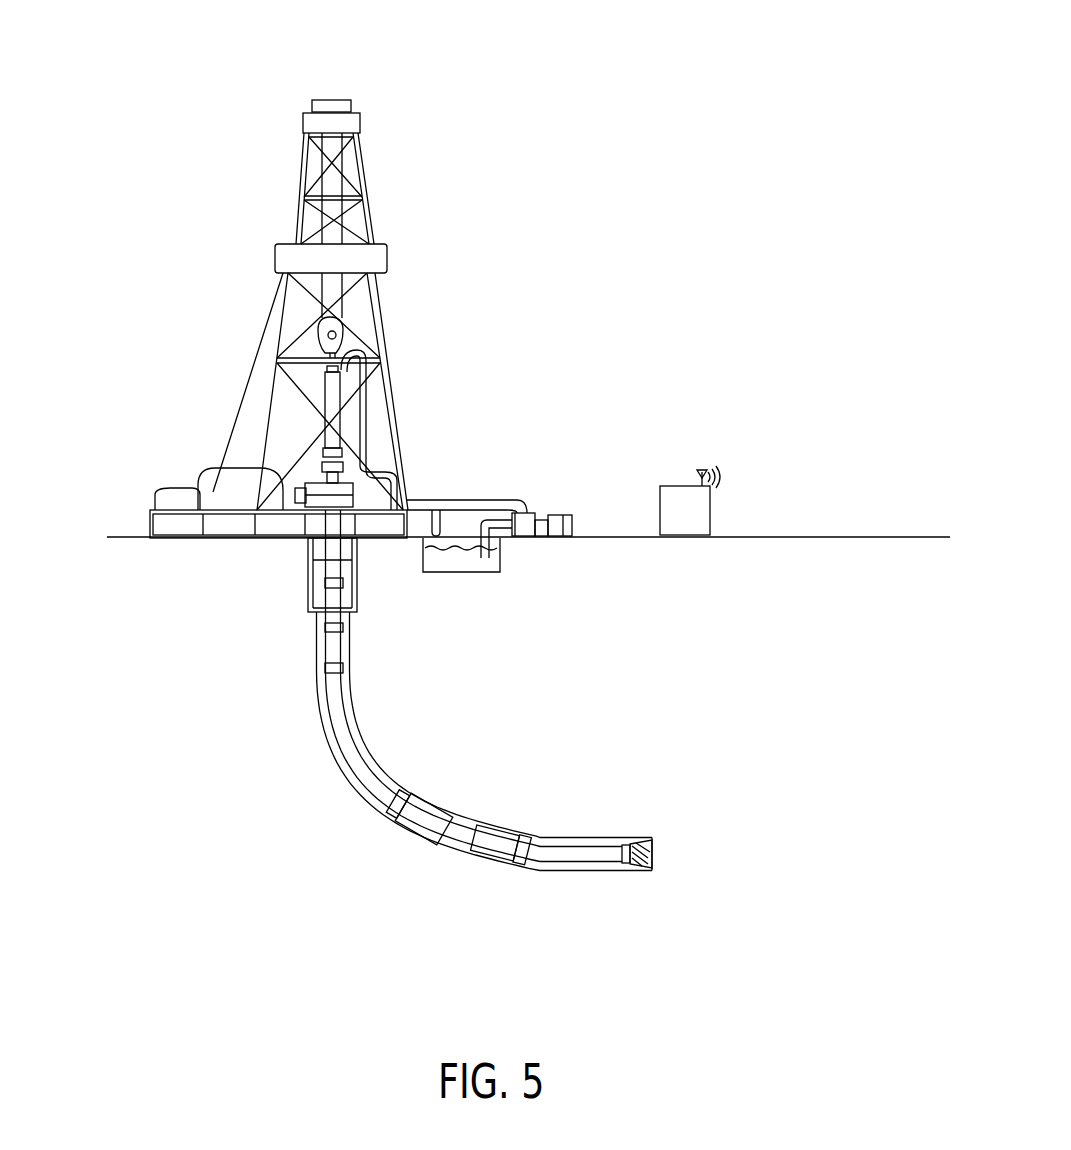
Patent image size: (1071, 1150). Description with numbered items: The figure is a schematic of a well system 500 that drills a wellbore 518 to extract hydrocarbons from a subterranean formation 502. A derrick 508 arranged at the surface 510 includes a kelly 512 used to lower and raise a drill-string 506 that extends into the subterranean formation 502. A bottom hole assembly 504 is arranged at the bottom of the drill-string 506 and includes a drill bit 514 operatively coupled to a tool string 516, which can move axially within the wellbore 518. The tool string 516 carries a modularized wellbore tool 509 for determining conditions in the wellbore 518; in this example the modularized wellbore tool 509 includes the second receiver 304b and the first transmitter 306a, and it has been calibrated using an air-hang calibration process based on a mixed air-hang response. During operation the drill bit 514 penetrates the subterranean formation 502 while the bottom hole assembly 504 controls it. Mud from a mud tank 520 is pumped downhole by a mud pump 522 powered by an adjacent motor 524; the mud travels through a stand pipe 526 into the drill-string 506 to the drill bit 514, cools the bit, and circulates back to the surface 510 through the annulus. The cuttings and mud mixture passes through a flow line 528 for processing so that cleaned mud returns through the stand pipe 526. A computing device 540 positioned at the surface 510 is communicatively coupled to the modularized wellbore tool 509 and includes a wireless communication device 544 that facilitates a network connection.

The well system 500 is at (110, 84).
The subterranean formation 502 is at (133, 590).
The bottom hole assembly 504 is at (580, 847).
The drill-string 506 is at (333, 692).
The derrick 508 is at (280, 323).
The modularized wellbore tool 509 is at (478, 772).
The surface 510 is at (118, 535).
The kelly 512 is at (338, 335).
The drill bit 514 is at (652, 853).
The tool string 516 is at (624, 826).
The wellbore 518 is at (318, 655).
The mud tank 520 is at (467, 565).
The mud pump 522 is at (533, 513).
The motor 524 is at (567, 515).
The stand pipe 526 is at (370, 422).
The flow line 528 is at (436, 517).
The computing device 540 is at (670, 486).
The communication device 544 is at (713, 465).
The second receiver 304b is at (407, 830).
The first transmitter 306a is at (517, 865).